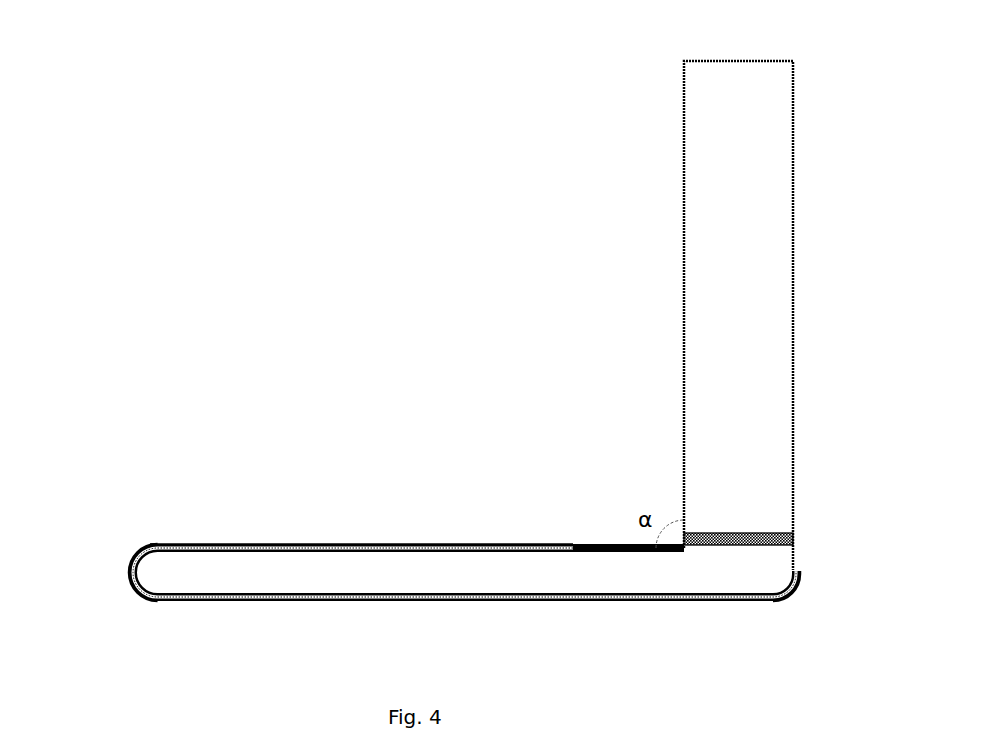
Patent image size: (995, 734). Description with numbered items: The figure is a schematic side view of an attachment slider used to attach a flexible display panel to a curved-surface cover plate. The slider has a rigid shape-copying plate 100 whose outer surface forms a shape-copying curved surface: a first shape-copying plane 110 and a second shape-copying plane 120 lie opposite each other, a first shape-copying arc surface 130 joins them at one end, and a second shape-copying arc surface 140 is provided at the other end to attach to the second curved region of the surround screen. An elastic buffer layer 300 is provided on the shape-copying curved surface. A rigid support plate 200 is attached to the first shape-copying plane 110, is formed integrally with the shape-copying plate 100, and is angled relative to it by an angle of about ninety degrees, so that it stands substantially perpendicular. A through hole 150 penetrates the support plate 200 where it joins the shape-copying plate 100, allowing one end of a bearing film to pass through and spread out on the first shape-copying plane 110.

The shape-copying plate 100 is at (598, 567).
The first shape-copying plane 110 is at (438, 543).
The second shape-copying plane 120 is at (340, 603).
The first shape-copying arc surface 130 is at (129, 572).
The second shape-copying arc surface 140 is at (786, 600).
The through hole 150 is at (758, 532).
The support plate 200 is at (713, 314).
The elastic buffer layer 300 is at (283, 543).